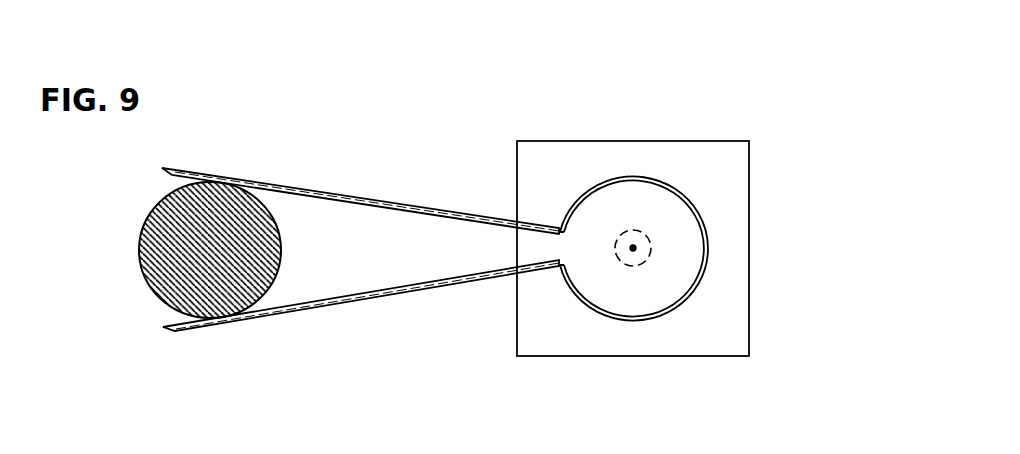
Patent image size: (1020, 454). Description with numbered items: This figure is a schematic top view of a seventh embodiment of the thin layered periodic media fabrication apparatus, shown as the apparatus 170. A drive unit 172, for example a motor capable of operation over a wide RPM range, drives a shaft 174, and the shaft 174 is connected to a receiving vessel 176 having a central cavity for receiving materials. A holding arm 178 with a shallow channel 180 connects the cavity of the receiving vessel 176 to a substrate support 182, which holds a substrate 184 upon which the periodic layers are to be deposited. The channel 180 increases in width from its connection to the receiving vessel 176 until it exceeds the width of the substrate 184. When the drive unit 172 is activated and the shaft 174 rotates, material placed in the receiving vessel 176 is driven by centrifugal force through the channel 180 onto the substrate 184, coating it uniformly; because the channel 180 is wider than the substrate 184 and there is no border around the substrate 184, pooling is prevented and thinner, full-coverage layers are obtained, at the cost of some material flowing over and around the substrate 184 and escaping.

The apparatus 170 is at (460, 97).
The drive unit 172 is at (633, 355).
The shaft 174 is at (636, 247).
The receiving vessel 176 is at (632, 178).
The holding arm 178 is at (283, 187).
The channel 180 is at (345, 250).
The substrate support 182 is at (263, 292).
The substrate 184 is at (207, 288).